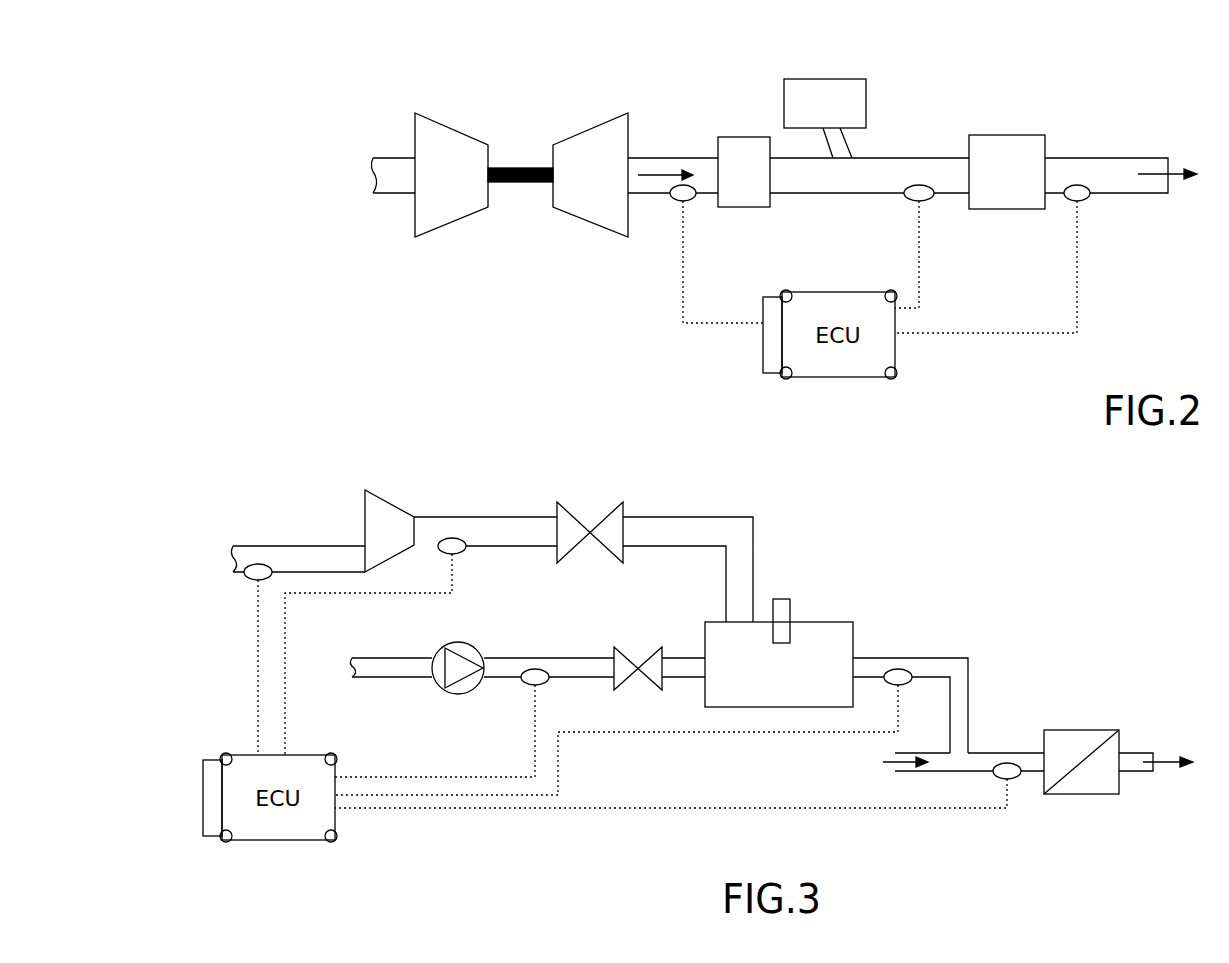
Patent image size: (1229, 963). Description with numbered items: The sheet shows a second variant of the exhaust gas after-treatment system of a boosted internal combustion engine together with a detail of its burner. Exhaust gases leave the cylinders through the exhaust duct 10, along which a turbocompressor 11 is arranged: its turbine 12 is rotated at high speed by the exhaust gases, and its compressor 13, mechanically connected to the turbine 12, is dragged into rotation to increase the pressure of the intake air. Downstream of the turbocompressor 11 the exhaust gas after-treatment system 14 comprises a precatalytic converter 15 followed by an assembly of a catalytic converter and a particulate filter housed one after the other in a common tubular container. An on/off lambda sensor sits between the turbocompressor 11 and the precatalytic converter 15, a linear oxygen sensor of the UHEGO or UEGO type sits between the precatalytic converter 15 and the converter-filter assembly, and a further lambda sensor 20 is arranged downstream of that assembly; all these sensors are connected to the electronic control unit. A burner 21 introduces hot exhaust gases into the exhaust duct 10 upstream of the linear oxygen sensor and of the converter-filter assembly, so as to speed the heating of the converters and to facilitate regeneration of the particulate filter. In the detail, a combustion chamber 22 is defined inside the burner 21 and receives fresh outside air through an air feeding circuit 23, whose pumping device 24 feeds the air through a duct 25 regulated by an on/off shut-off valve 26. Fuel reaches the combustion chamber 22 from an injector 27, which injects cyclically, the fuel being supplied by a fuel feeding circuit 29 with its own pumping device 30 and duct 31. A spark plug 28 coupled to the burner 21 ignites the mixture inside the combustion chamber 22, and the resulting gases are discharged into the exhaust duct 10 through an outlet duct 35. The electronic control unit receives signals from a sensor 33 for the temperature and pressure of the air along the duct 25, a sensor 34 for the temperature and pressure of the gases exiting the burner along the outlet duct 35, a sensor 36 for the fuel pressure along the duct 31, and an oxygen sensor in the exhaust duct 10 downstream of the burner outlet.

In FIG. 2, the exhaust duct 10 is at (696, 158).
In FIG. 2, the turbocompressor 11 is at (517, 124).
In FIG. 2, the turbine 12 is at (582, 131).
In FIG. 2, the compressor 13 is at (442, 129).
In FIG. 2, the exhaust gas after-treatment system 14 is at (914, 131).
In FIG. 2, the precatalytic converter 15 is at (744, 172).
In FIG. 3, the precatalytic converter 15 is at (1076, 790).
In FIG. 2, the lambda sensor 20 is at (1084, 202).
In FIG. 2, the burner 21 is at (825, 118).
In FIG. 3, the combustion chamber 22 is at (780, 707).
In FIG. 3, the air feeding circuit 23 is at (718, 488).
In FIG. 3, the pumping device 24 is at (390, 513).
In FIG. 3, the duct 25 is at (676, 516).
In FIG. 3, the shut-off valve 26 is at (620, 545).
In FIG. 3, the injector 27 is at (682, 677).
In FIG. 3, the spark plug 28 is at (784, 618).
In FIG. 3, the fuel feeding circuit 29 is at (509, 646).
In FIG. 3, the pumping device 30 is at (442, 684).
In FIG. 3, the duct 31 is at (566, 660).
In FIG. 3, the sensor 33 is at (444, 554).
In FIG. 3, the sensor 34 is at (900, 668).
In FIG. 3, the outlet duct 35 is at (972, 708).
In FIG. 3, the sensor 36 is at (524, 686).